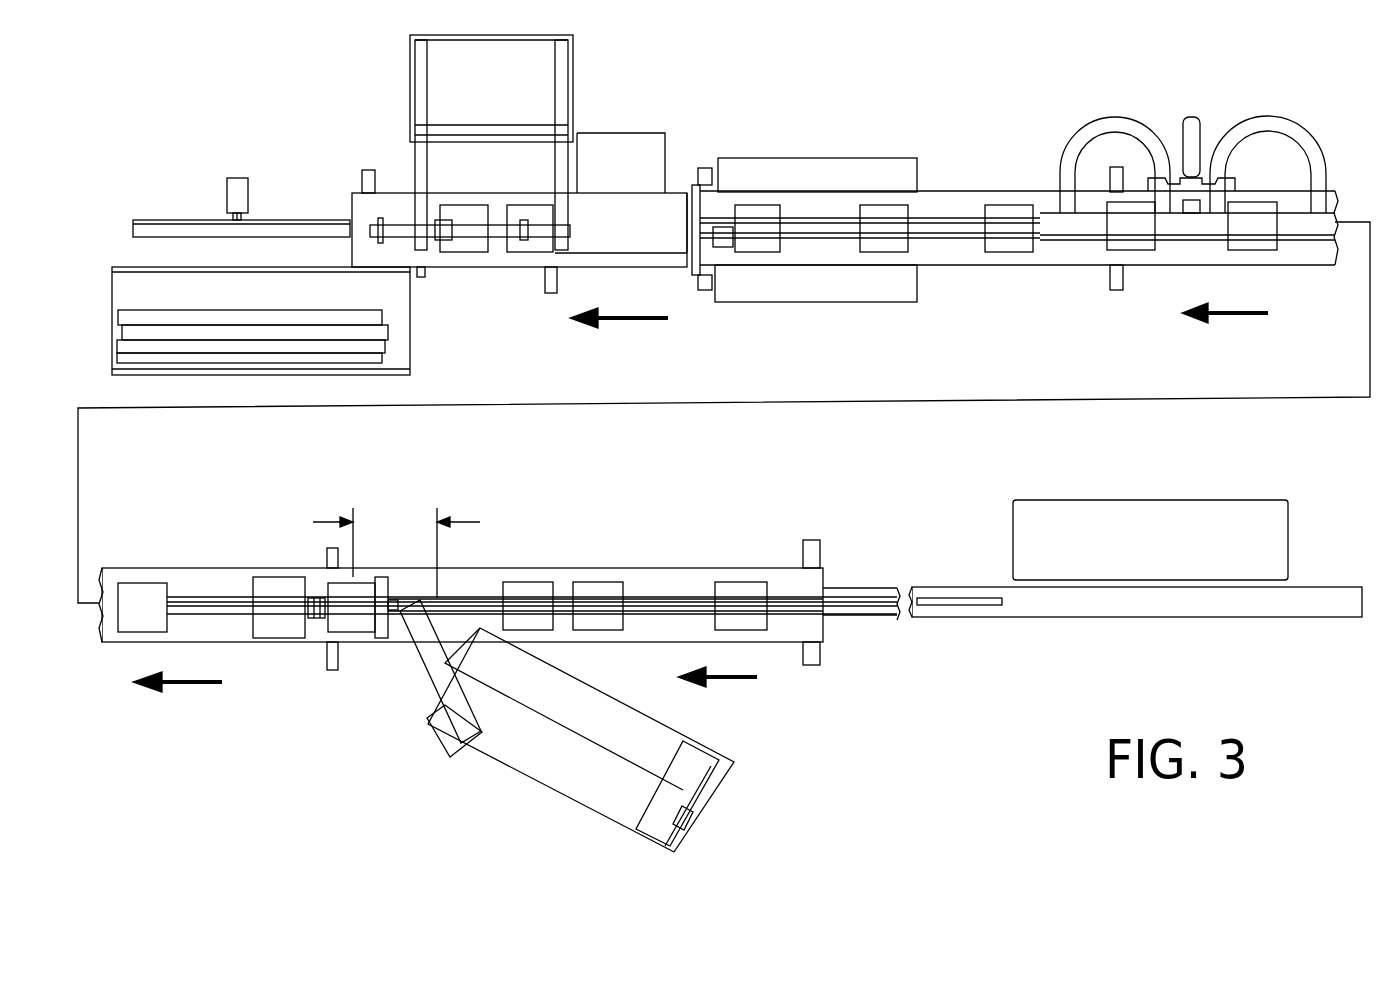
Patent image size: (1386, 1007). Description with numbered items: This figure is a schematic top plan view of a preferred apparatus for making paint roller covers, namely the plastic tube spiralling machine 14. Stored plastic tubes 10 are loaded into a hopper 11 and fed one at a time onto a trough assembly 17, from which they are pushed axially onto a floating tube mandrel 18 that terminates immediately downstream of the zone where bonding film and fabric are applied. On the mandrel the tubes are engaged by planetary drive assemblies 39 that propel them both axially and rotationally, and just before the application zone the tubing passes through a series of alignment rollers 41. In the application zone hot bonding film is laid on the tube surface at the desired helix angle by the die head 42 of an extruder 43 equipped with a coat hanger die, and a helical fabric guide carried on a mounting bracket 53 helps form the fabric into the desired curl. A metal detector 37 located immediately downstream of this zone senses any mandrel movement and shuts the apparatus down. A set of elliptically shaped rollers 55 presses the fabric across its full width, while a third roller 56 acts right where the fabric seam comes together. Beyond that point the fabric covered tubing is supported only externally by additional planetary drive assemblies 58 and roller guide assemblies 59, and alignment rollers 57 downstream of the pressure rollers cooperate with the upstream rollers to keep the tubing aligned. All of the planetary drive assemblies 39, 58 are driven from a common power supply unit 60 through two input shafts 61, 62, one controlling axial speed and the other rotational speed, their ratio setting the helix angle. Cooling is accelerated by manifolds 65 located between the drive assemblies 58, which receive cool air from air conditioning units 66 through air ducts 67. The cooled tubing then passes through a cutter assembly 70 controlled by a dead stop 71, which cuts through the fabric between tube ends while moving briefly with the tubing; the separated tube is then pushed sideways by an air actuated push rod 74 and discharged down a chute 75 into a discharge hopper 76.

The tubes 10 is at (292, 355).
The hopper 11 is at (1288, 527).
The plastic tube spiralling machine/apparatus 14 is at (760, 700).
The trough assembly 17 is at (1258, 605).
The floating tube mandrel 18 is at (880, 625).
The metal detector 37 is at (316, 630).
The planetary drive assemblies 39 is at (527, 585).
The alignment rollers 41 is at (458, 585).
The die head 42 is at (437, 650).
The extruder 43 is at (548, 770).
The mounting bracket 53 is at (437, 680).
The elliptically shaped rollers 55 is at (382, 640).
The third roller 56 is at (396, 600).
The alignment rollers 57 is at (266, 580).
The planetary drive assemblies 58 is at (522, 205).
The roller guide assemblies 59 is at (422, 277).
The common power supply unit 60 is at (822, 165).
The input shaft 61 is at (815, 245).
The input shaft 62 is at (838, 218).
The manifolds 65 is at (1068, 235).
The air conditioning units 66 is at (1180, 178).
The air ducts 67 is at (1105, 120).
The cutter assembly 70 is at (635, 150).
The dead stop 71 is at (370, 222).
The air actuated push rod 74 is at (230, 212).
The chute 75 is at (120, 280).
The discharge hopper 76 is at (410, 352).